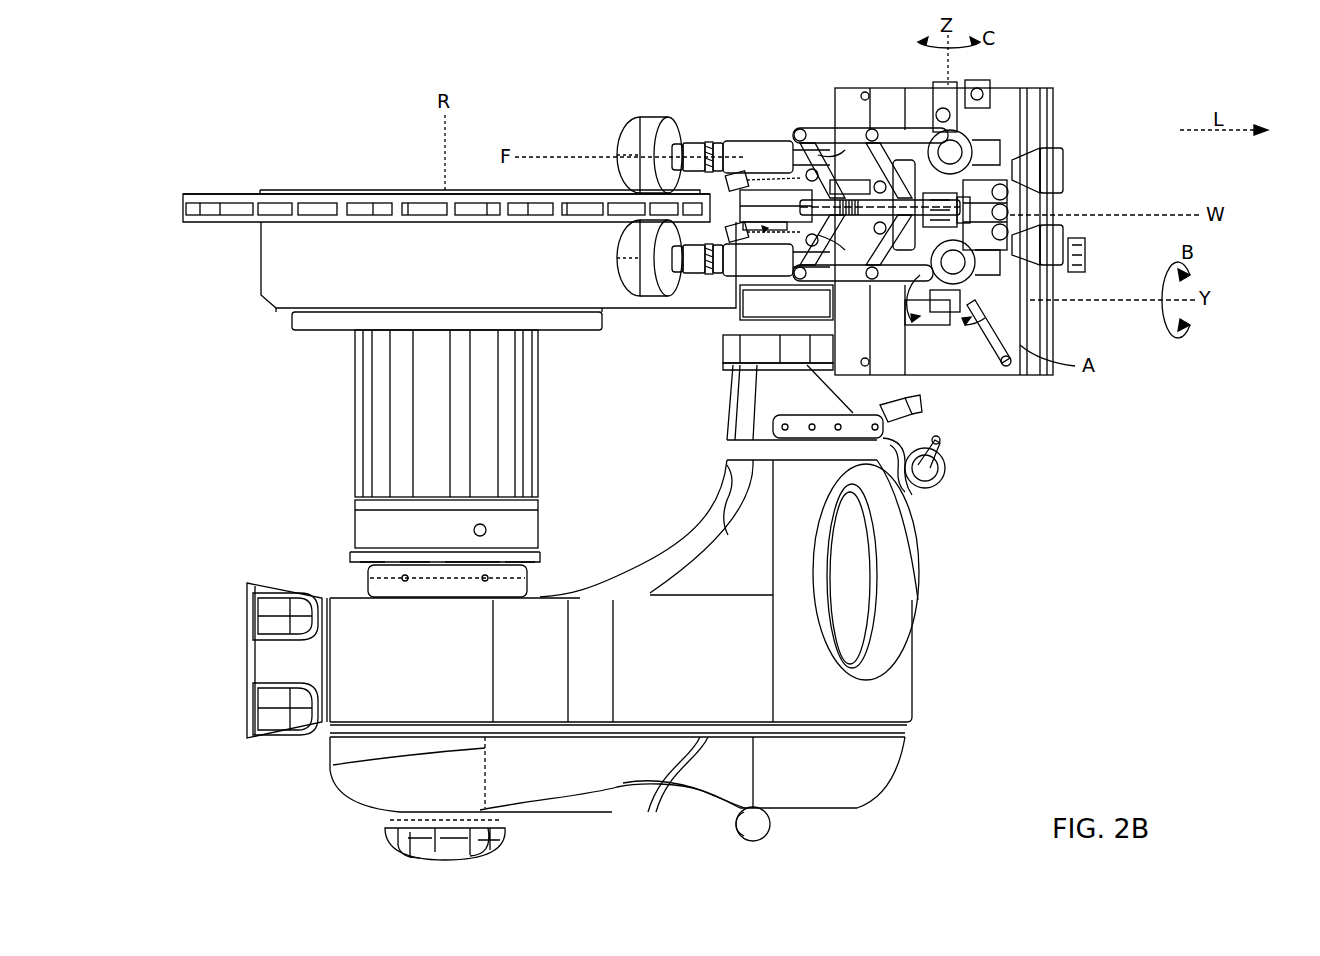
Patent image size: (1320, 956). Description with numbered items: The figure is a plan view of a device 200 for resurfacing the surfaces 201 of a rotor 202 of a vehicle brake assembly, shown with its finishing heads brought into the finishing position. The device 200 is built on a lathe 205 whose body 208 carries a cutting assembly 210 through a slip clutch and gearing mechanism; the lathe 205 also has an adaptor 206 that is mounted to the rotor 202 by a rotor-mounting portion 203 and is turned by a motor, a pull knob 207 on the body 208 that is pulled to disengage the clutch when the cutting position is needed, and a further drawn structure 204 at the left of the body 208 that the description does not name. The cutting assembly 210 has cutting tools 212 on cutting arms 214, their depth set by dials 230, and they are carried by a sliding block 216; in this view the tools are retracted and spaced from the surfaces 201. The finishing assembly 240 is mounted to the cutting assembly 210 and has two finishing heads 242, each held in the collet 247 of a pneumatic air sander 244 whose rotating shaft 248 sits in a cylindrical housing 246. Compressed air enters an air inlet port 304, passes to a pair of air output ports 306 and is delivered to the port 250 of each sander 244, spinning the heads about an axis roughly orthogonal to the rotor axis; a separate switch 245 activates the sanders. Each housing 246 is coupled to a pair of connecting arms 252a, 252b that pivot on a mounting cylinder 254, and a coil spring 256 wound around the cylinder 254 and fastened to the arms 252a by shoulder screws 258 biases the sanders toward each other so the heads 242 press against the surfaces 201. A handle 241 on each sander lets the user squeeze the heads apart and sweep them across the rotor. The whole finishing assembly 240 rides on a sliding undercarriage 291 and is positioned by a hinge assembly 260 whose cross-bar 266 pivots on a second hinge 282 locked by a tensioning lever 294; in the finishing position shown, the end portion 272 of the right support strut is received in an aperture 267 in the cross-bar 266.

The device 200 is at (198, 96).
The surfaces 201 is at (378, 190).
The rotor 202 is at (310, 195).
The rotor-mounting portion 203 is at (262, 270).
The base bracket 204 is at (255, 668).
The lathe 205 is at (318, 518).
The adaptor 206 is at (358, 415).
The pull knob 207 is at (764, 826).
The body 208 is at (700, 722).
The cutting assembly 210 is at (775, 235).
The cutting tools 212 is at (660, 150).
The cutting arms 214 is at (776, 160).
The sliding block 216 is at (845, 130).
The dials 230 is at (1045, 172).
The finishing assembly 240 is at (940, 360).
The handle 241 is at (830, 160).
The finishing heads 242 is at (640, 118).
The pneumatic air sander 244 is at (745, 140).
The switch 245 is at (930, 490).
The cylindrical housing 246 is at (900, 135).
The collet 247 is at (665, 140).
The rotating shaft 248 is at (715, 140).
The port 250 is at (975, 160).
The connecting arm 252a is at (752, 346).
The connecting arm 252b is at (985, 285).
The mounting cylinder 254 is at (780, 292).
The coil spring 256 is at (850, 130).
The shoulder screws 258 is at (875, 135).
The hinge assembly 260 is at (1100, 128).
The cross-bar 266 is at (955, 95).
The aperture 267 is at (990, 100).
The end portion 272 is at (990, 140).
The second hinge 282 is at (960, 340).
The sliding undercarriage 291 is at (1000, 270).
The tensioning lever 294 is at (990, 370).
The air inlet port 304 is at (1010, 212).
The air output ports 306 is at (1010, 192).